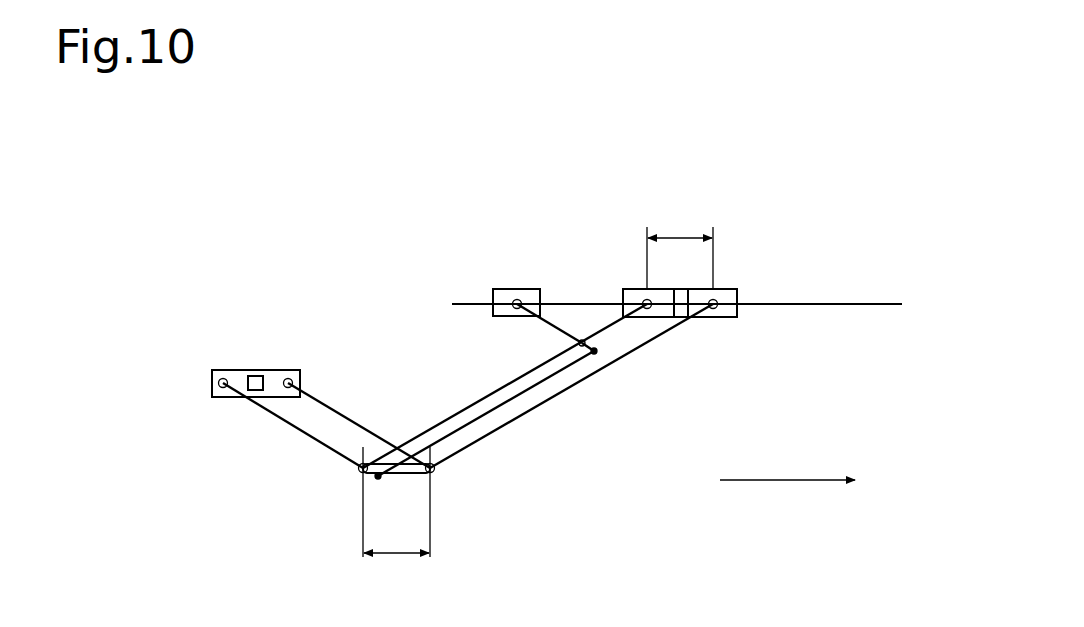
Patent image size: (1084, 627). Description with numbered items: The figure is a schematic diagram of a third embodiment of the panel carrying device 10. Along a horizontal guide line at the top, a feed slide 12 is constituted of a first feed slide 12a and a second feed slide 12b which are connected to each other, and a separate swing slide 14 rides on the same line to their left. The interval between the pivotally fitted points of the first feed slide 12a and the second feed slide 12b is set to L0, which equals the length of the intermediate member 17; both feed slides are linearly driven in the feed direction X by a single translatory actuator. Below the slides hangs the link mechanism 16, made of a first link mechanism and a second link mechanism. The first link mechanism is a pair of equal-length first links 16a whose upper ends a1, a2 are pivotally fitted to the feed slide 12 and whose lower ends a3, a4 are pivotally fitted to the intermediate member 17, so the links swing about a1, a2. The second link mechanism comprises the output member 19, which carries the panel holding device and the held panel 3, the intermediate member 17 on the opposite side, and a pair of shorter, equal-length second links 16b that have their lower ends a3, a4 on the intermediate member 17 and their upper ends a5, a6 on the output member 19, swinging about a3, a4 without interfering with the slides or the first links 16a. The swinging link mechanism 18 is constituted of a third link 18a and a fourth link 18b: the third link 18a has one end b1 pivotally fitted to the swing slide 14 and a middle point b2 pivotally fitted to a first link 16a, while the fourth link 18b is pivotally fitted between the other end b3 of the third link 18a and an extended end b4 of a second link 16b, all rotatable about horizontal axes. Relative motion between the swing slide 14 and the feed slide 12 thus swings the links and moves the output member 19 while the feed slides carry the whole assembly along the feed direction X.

The panel carrying device 10 is at (350, 293).
The feed slide 12 is at (758, 162).
The first feed slide 12a is at (722, 293).
The second feed slide 12b is at (632, 293).
The swing slide 14 is at (500, 289).
The workpiece / holder 3 is at (250, 375).
The output member 19 is at (214, 370).
The intermediate member 17 is at (418, 475).
The link mechanism 16 is at (456, 410).
The first links 16a is at (492, 404).
The second links 16b is at (337, 413).
The swinging link mechanism 18 is at (482, 353).
The third link 18a is at (557, 327).
The fourth link 18b is at (438, 440).
The end of first link a1 is at (649, 308).
The end of first link a2 is at (716, 308).
The end of first and second links a3 is at (360, 471).
The end of first and second links a4 is at (433, 472).
The end of second link a5 is at (217, 375).
The end of second link a6 is at (291, 376).
The end of third link b1 is at (516, 298).
The middle point of third link b2 is at (578, 344).
The other end of third link b3 is at (596, 353).
The extended end of second link b4 is at (378, 478).
The interval between pivotally fitted points L0 is at (538, 400).
The feed direction X is at (787, 454).